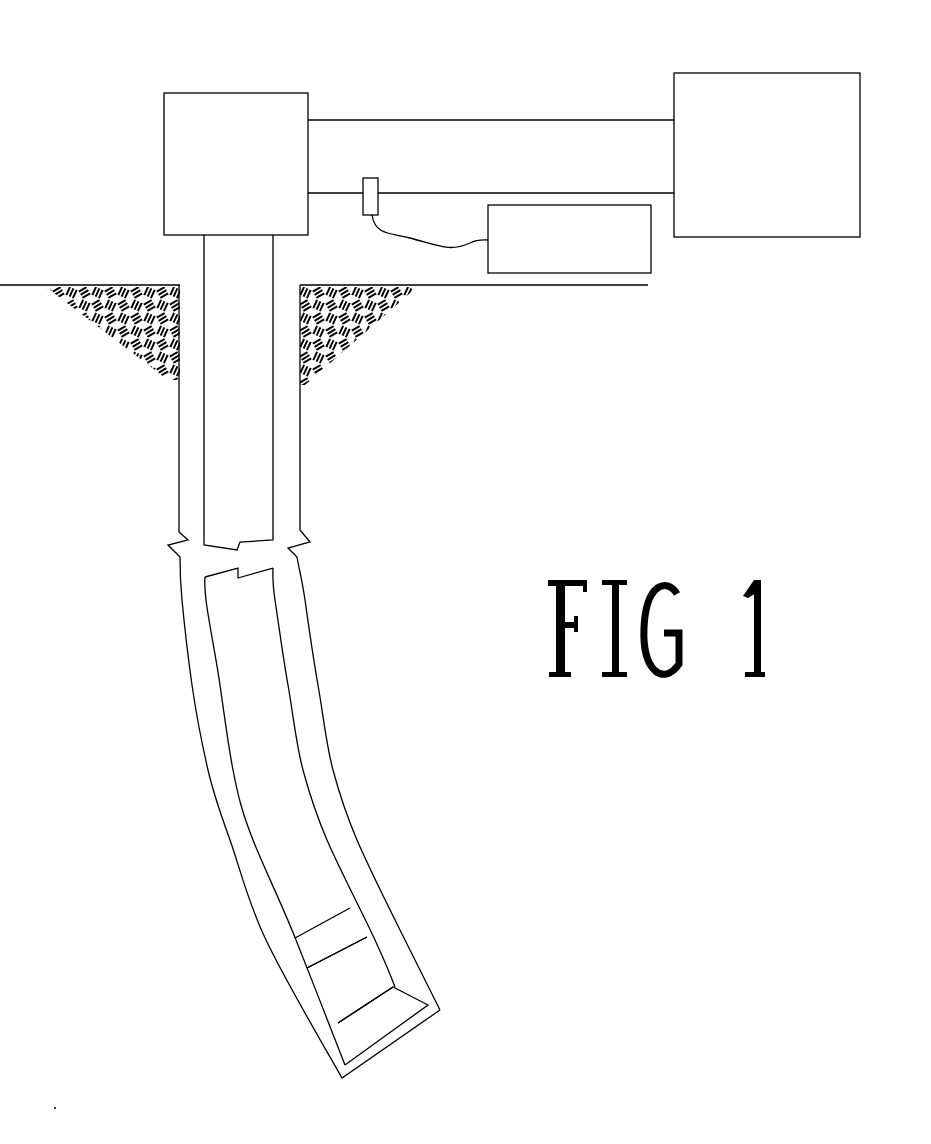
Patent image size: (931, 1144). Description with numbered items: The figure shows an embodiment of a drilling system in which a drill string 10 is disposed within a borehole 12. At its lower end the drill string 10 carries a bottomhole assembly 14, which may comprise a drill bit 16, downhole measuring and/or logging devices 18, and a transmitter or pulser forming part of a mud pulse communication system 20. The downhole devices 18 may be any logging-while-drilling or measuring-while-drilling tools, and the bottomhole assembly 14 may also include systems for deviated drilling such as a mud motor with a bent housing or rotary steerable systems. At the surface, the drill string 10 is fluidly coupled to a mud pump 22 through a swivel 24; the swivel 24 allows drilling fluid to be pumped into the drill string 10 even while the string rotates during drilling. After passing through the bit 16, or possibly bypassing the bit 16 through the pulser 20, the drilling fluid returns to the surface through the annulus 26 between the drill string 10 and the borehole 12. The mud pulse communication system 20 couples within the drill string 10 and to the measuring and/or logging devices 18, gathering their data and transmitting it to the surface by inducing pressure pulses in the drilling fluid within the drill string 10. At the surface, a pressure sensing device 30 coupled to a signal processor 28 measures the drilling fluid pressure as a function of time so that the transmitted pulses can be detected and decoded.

The drill string 10 is at (238, 470).
The borehole 12 is at (188, 282).
The bottomhole assembly 14 is at (258, 987).
The drill bit 16 is at (397, 1015).
The downhole measuring and/or logging devices 18 is at (377, 977).
The mud pulse communication system 20 is at (360, 915).
The mud pump 22 is at (727, 73).
The swivel 24 is at (250, 192).
The annulus 26 is at (304, 660).
The signal processor 28 is at (645, 258).
The pressure sensing device 30 is at (365, 215).